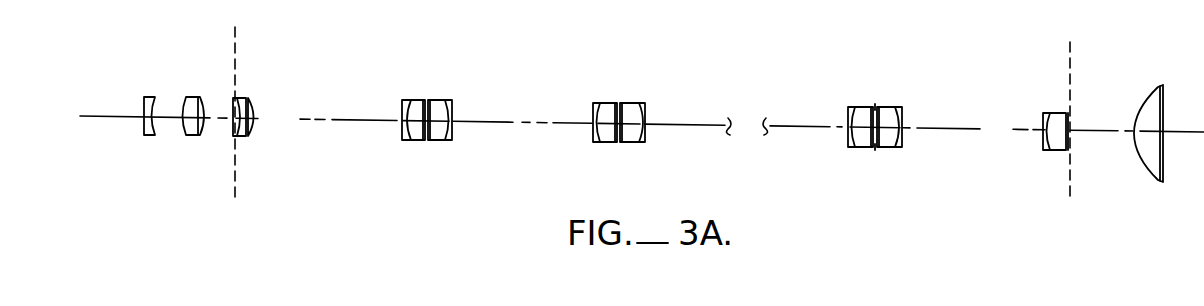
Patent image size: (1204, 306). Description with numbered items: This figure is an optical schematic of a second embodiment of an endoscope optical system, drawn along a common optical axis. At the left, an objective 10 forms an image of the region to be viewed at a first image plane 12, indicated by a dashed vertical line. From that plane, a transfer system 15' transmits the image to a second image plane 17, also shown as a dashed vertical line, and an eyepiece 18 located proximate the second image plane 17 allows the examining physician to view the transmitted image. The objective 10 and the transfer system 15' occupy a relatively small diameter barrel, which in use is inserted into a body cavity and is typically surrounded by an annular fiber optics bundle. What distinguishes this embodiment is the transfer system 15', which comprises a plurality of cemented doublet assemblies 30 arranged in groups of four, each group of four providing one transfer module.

The objective 10 is at (207, 60).
The first image plane 12 is at (236, 173).
The transfer system 15' is at (653, 89).
The second image plane 17 is at (1069, 175).
The eyepiece 18 is at (1157, 87).
The cemented doublet assemblies 30 is at (253, 98).